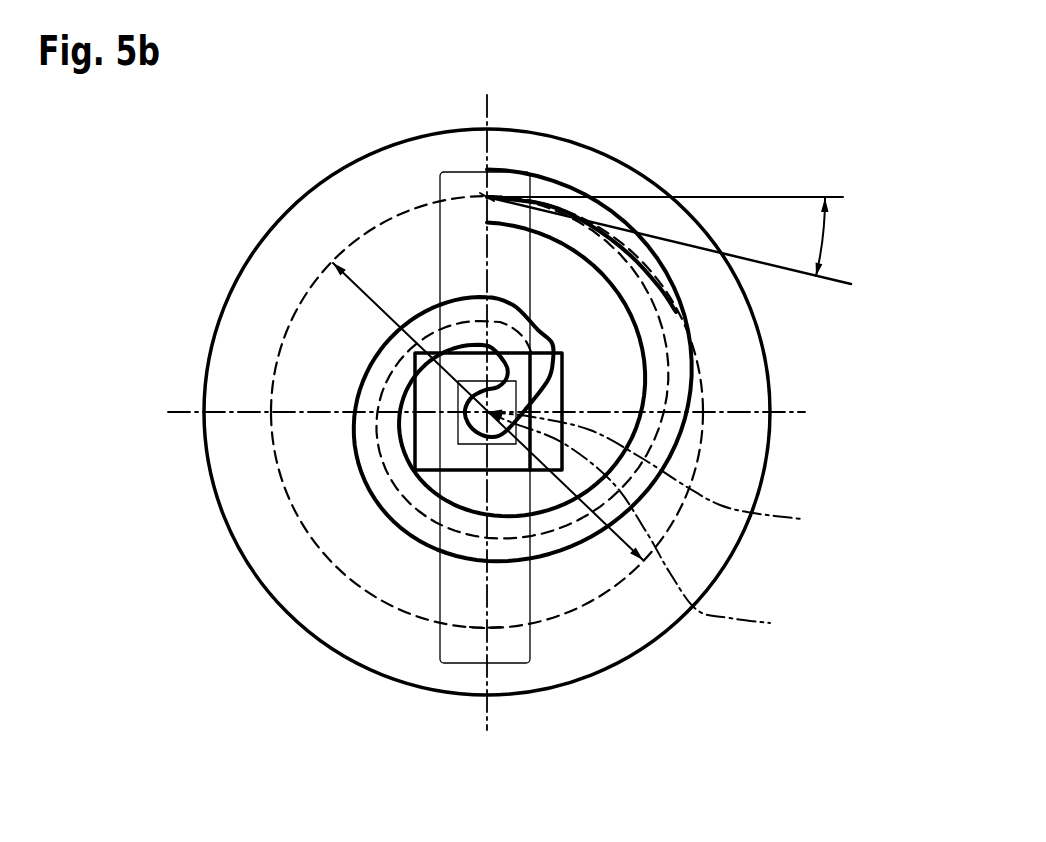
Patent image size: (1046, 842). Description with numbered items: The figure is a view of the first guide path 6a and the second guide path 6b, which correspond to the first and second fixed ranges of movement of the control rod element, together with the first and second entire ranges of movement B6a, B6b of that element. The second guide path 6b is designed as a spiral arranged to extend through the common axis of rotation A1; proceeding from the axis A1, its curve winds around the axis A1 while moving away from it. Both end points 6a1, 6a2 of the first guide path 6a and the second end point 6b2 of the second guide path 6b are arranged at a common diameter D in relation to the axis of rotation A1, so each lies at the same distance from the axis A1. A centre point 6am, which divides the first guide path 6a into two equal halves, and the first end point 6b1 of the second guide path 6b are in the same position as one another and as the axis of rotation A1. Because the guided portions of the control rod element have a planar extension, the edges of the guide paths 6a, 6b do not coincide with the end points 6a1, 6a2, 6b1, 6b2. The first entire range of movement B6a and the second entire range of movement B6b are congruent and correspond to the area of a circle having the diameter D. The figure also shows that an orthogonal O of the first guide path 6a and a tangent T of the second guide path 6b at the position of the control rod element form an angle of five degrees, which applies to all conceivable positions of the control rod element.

The first guide path 6a is at (487, 263).
The second guide path 6b is at (570, 225).
The first end point of the first guide path 6a1 is at (487, 628).
The second end point of the first guide path 6a2 is at (487, 197).
The second end point of the second guide path 6b2 is at (411, 140).
The centre point of the first guide path 6am is at (633, 417).
The first end point of the second guide path 6b1 is at (633, 417).
The first entire range of movement B6a is at (285, 335).
The second entire range of movement B6b is at (283, 498).
The common diameter D is at (363, 291).
The orthogonal of the first guide path O is at (773, 195).
The tangent of the second guide path T is at (833, 290).
The axis of rotation A1 is at (663, 476).